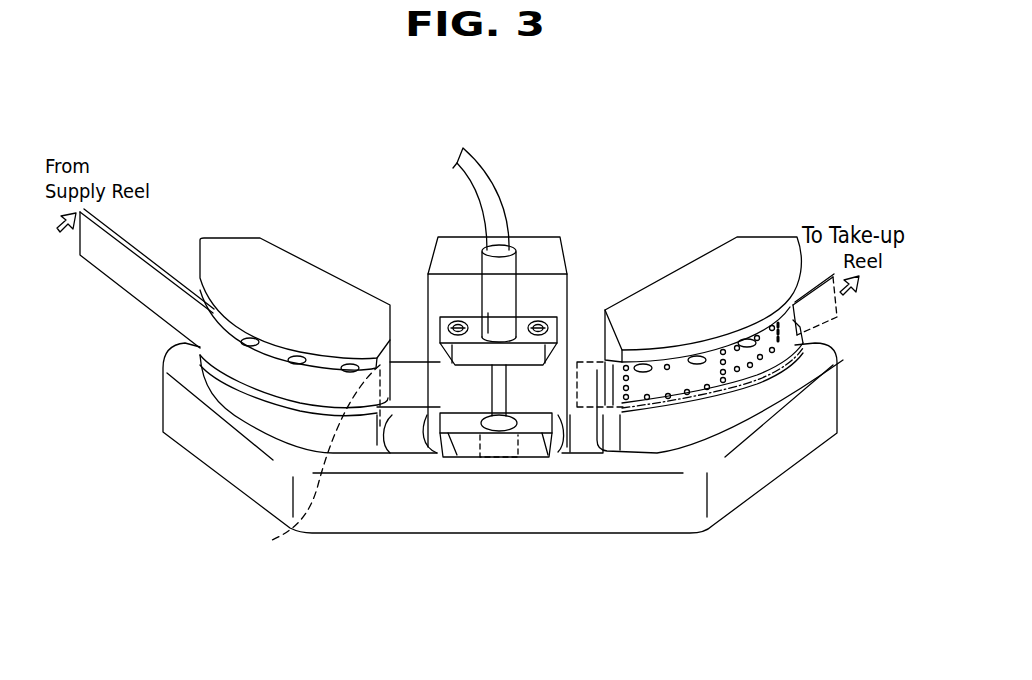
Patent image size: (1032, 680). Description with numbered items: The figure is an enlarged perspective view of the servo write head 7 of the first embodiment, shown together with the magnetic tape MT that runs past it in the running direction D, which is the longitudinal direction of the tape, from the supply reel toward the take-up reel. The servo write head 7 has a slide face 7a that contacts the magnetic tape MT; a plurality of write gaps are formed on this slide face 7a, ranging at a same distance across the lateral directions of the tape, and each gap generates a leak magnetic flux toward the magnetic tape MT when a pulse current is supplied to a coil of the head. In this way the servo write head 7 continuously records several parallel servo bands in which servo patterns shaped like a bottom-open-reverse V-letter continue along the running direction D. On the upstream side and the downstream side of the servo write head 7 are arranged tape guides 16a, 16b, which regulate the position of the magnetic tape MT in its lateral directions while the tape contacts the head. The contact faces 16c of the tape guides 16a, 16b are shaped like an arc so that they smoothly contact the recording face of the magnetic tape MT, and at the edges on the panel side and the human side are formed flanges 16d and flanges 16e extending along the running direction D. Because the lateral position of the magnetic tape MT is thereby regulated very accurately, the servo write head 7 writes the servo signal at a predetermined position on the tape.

The servo write head 7 is at (548, 186).
The slide face 7a is at (500, 388).
The tape guide 16a is at (285, 243).
The tape guide 16b is at (714, 244).
The contact face 16c is at (737, 538).
The flange 16d is at (240, 405).
The flange 16e is at (343, 297).
The magnetic tape MT is at (148, 290).
The running direction D is at (56, 237).